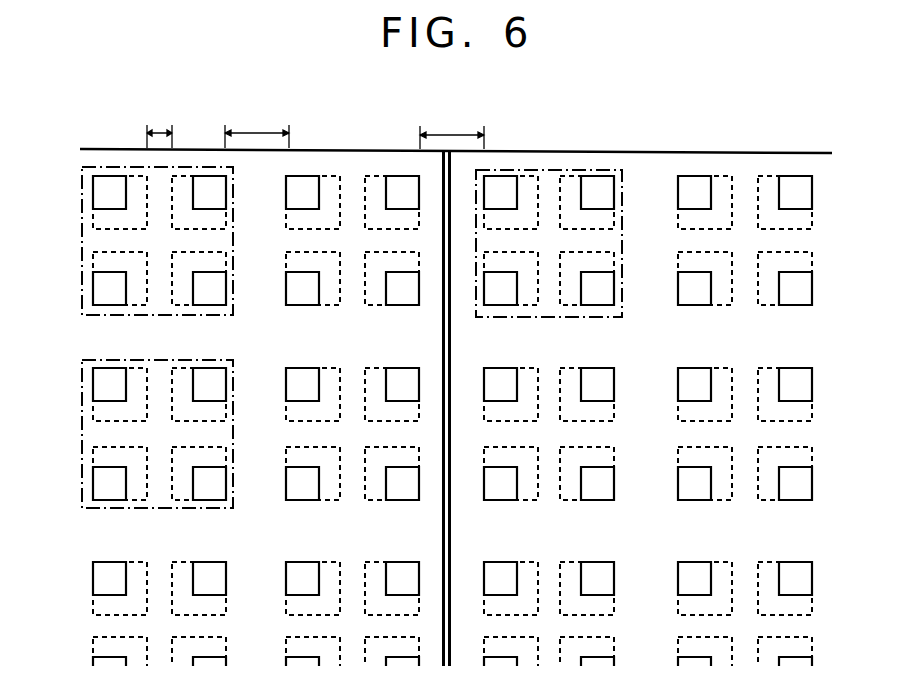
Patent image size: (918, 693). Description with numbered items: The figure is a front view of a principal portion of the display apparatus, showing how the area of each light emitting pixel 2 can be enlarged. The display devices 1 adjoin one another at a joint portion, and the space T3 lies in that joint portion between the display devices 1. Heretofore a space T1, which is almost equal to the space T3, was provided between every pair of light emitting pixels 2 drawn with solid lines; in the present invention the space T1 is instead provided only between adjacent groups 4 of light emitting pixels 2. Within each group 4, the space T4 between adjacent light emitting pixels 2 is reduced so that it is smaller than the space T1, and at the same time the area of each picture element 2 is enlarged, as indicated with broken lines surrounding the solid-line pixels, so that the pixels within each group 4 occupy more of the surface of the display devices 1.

The display device 1 is at (94, 148).
The light emitting pixel 2 is at (395, 181).
The group of light emitting pixels 4 is at (82, 255).
The space between adjacent groups T1 is at (257, 126).
The space in the joint portion of the display devices T3 is at (452, 128).
The space between adjacent light emitting pixels in each group T4 is at (159, 126).